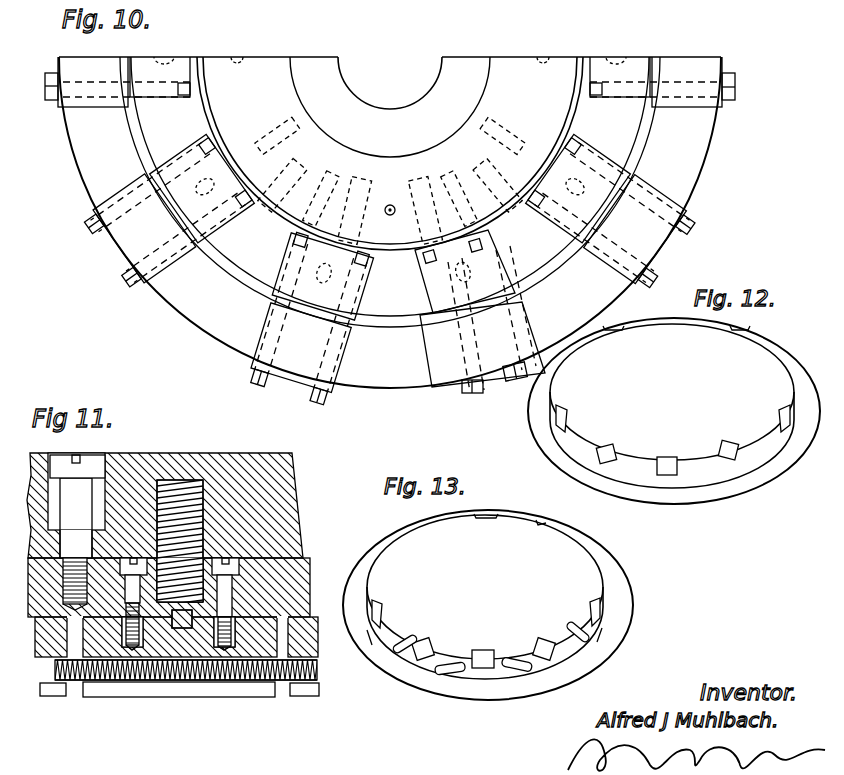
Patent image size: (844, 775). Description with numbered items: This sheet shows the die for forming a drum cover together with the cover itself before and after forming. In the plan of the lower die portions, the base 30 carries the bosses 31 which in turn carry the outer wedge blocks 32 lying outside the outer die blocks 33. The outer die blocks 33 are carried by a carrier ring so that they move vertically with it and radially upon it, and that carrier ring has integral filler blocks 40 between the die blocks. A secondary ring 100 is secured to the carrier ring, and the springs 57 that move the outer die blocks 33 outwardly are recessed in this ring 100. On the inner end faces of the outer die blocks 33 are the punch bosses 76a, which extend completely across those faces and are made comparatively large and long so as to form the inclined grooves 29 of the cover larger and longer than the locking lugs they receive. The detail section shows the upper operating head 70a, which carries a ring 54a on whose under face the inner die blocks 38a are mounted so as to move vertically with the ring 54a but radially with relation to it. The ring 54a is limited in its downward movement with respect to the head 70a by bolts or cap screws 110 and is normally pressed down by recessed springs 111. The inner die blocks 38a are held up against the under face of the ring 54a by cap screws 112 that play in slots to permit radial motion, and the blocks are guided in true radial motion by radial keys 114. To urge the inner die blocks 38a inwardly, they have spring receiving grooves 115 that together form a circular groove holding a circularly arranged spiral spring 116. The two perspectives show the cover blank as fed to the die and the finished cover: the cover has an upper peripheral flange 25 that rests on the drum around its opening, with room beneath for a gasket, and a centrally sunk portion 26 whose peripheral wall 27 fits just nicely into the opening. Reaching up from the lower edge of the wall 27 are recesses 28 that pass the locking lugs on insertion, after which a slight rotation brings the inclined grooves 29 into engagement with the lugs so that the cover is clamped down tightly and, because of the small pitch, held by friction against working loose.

In FIG. 10, the base 30 is at (711, 167).
In FIG. 10, the secondary ring 100 is at (512, 80).
In FIG. 10, the punch bosses 76a is at (303, 228).
In FIG. 10, the springs 57 is at (238, 142).
In FIG. 10, the outer die blocks 33 is at (390, 205).
In FIG. 10, the bosses 31 is at (390, 206).
In FIG. 10, the outer wedge blocks 32 is at (437, 326).
In FIG. 10, the filler blocks 40 is at (390, 186).
In FIG. 11, the operating head 70a is at (289, 486).
In FIG. 11, the bolts or cap screws 110 is at (76, 505).
In FIG. 11, the recessed springs 111 is at (190, 480).
In FIG. 11, the ring 54a is at (310, 558).
In FIG. 11, the cap screws 112 is at (300, 571).
In FIG. 11, the inner die blocks 38a is at (47, 650).
In FIG. 11, the radial keys 114 is at (180, 630).
In FIG. 11, the spiral spring 116 is at (114, 683).
In FIG. 11, the spring receiving grooves 115 is at (234, 690).
In FIG. 12, the upper peripheral flange 25 is at (686, 490).
In FIG. 13, the upper peripheral flange 25 is at (618, 632).
In FIG. 12, the centrally sunk portion 26 is at (672, 406).
In FIG. 13, the centrally sunk portion 26 is at (485, 597).
In FIG. 12, the peripheral wall 27 is at (636, 458).
In FIG. 13, the peripheral wall 27 is at (517, 655).
In FIG. 12, the recesses 28 is at (568, 420).
In FIG. 13, the recesses 28 is at (548, 520).
In FIG. 13, the inclined grooves 29 is at (458, 672).